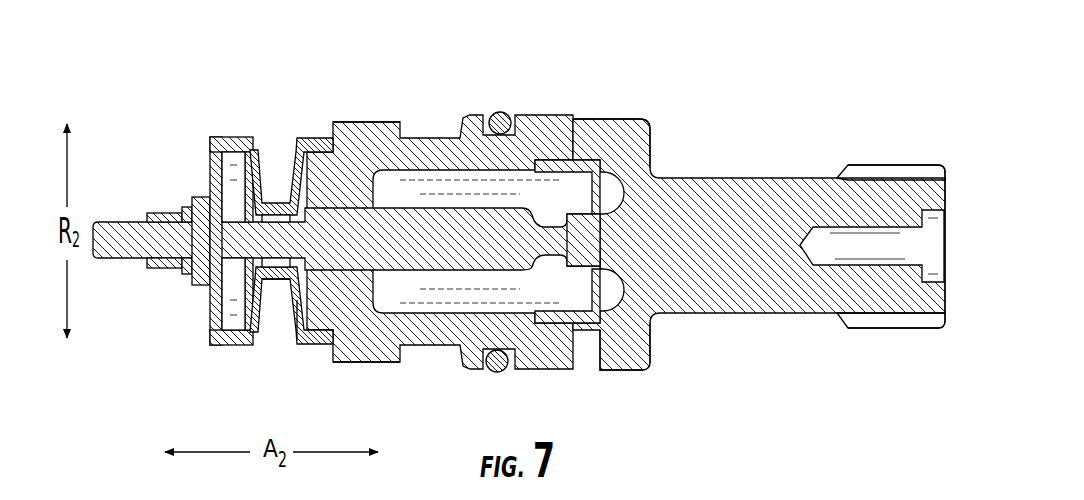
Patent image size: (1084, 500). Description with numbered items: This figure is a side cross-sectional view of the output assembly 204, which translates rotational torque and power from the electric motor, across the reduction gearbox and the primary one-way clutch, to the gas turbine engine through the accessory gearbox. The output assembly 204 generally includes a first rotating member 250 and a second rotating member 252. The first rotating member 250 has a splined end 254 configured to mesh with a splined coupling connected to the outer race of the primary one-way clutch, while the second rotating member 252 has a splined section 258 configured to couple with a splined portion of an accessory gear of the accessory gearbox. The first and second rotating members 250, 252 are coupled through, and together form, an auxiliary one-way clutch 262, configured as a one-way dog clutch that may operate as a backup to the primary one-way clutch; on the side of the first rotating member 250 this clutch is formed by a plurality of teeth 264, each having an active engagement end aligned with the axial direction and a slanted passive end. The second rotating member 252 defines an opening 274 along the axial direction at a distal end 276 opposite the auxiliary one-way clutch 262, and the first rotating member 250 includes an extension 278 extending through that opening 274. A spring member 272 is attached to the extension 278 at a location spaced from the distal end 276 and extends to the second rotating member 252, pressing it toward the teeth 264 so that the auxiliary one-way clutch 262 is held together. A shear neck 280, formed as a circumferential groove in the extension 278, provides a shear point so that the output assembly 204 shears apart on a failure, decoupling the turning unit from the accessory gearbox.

The output assembly 204 is at (570, 68).
The first rotating member 250 is at (772, 185).
The second rotating member 252 is at (440, 150).
The splined end 254 is at (920, 158).
The splined section 258 is at (352, 118).
The auxiliary one-way clutch 262 is at (604, 380).
The teeth of the first rotating member 264 is at (582, 152).
The spring member 272 is at (270, 150).
The opening 274 is at (336, 240).
The distal end 276 is at (295, 323).
The extension 278 is at (427, 255).
The shear neck 280 is at (545, 202).